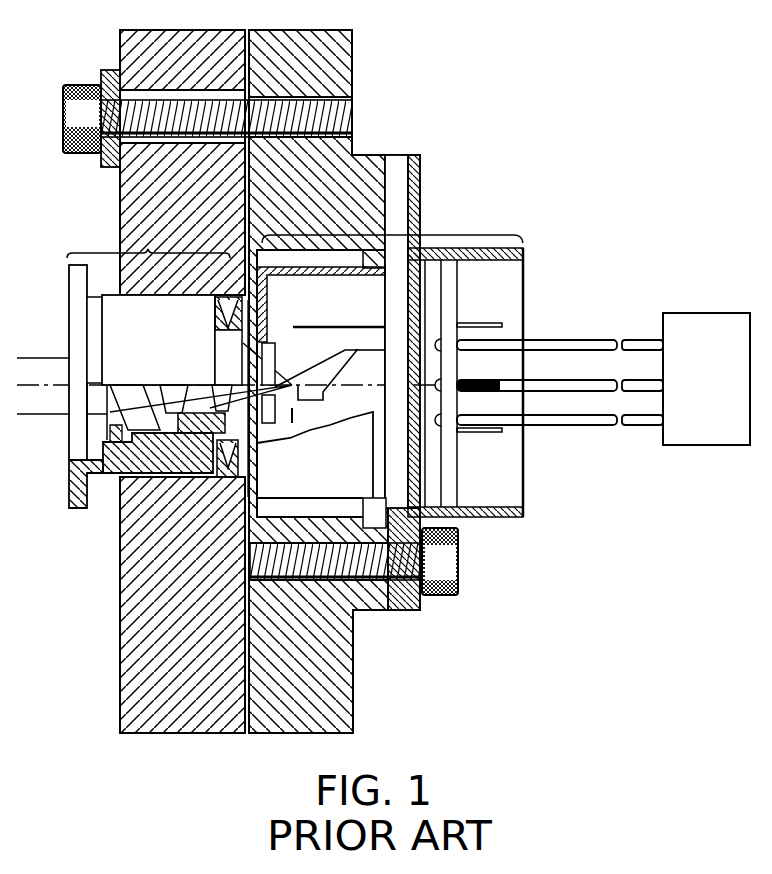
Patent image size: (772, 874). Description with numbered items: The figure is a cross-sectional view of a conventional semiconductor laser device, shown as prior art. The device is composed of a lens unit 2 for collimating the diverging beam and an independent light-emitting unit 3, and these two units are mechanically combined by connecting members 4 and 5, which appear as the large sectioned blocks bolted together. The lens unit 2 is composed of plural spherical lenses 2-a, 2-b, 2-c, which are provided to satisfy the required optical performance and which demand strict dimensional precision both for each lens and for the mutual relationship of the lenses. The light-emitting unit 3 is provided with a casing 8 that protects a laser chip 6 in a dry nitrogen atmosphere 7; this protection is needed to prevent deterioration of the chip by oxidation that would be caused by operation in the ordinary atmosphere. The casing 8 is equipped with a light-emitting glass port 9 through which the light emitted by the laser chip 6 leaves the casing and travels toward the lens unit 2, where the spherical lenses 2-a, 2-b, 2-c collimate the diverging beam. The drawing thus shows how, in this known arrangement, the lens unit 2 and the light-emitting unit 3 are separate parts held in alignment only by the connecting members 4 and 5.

The lens unit 2 is at (154, 367).
The spherical lens 2-a is at (228, 392).
The spherical lens 2-b is at (185, 395).
The spherical lens 2-c is at (140, 400).
The light-emitting unit 3 is at (391, 236).
The connecting member 4 is at (186, 36).
The connecting member 5 is at (298, 30).
The laser chip 6 is at (292, 383).
The dry nitrogen atmosphere 7 is at (348, 296).
The casing 8 is at (275, 268).
The light-emitting glass port 9 is at (270, 343).